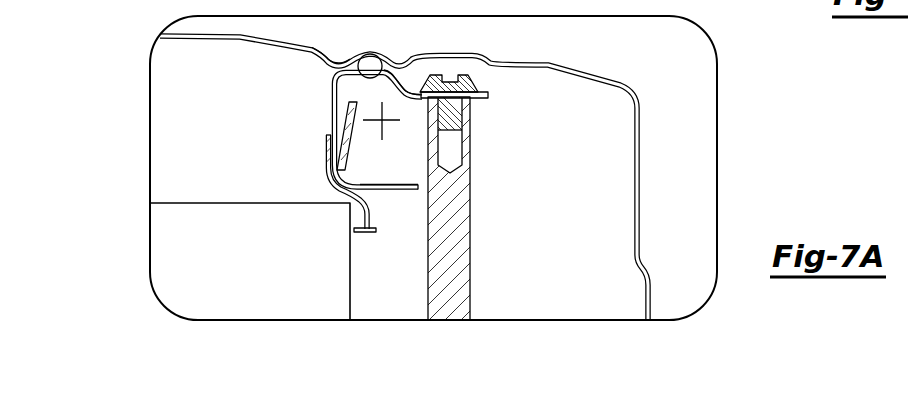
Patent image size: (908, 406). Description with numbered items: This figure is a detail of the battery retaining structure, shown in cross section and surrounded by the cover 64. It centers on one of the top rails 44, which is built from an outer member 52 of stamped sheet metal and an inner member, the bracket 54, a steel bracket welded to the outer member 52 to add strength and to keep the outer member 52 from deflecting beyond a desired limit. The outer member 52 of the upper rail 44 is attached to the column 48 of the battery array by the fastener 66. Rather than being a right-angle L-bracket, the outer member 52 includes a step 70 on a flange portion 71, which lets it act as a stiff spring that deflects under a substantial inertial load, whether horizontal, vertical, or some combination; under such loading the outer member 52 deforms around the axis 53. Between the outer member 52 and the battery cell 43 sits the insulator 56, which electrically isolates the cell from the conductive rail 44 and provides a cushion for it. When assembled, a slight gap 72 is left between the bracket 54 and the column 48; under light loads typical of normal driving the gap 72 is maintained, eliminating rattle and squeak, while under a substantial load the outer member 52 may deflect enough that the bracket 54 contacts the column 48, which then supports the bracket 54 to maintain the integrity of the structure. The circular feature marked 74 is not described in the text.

The battery cell 43 is at (256, 277).
The top rail 44 is at (322, 90).
The column 48 is at (471, 270).
The outer member 52 is at (327, 66).
The axis 53 is at (384, 122).
The inner member 54 is at (346, 112).
The insulator 56 is at (358, 234).
The cover 64 is at (641, 224).
The fastener 66 is at (472, 83).
The step 70 is at (405, 88).
The flange portion 71 is at (482, 98).
The gap 72 is at (423, 195).
The weld 74 is at (370, 56).